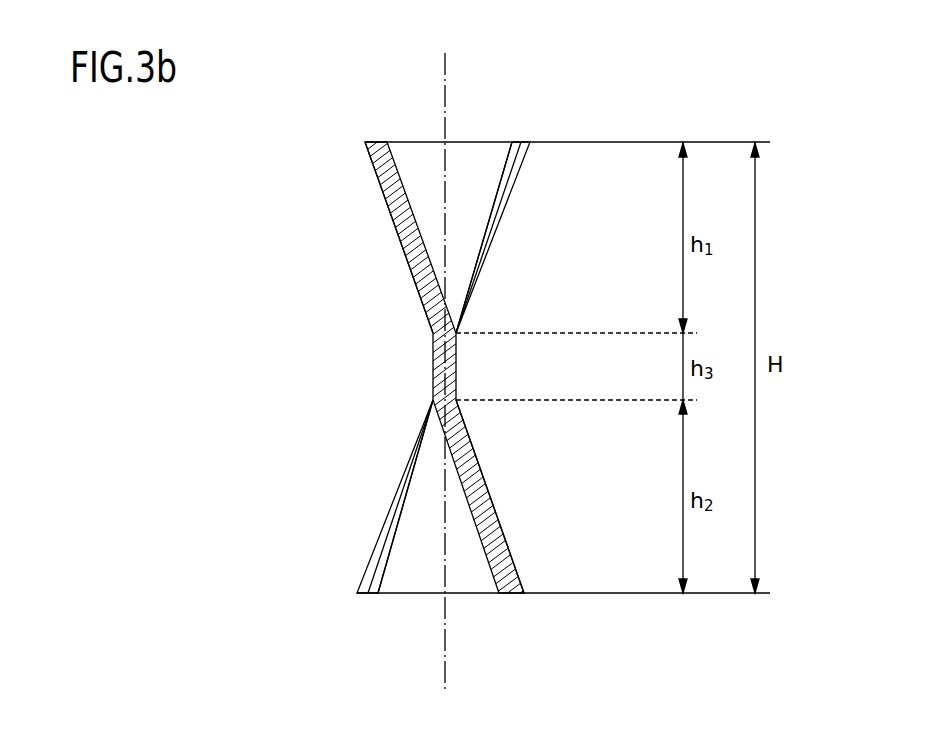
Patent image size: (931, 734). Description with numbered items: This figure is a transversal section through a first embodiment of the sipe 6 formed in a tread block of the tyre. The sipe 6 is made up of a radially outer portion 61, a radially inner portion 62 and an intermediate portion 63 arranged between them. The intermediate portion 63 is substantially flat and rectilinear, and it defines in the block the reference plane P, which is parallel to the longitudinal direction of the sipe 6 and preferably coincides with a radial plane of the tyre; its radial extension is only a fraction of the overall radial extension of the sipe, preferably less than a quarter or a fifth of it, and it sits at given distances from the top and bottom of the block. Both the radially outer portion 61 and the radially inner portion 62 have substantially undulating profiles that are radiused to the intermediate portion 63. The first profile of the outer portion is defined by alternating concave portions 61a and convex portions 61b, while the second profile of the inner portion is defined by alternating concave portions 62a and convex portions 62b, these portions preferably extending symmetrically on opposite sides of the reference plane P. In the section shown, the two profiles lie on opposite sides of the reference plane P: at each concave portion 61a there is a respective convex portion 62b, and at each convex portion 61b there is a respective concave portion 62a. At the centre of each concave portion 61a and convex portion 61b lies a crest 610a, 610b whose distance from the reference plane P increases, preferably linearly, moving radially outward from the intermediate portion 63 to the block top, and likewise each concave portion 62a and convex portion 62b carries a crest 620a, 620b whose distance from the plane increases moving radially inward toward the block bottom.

The sipe 6 is at (603, 93).
The reference plane P is at (445, 97).
The radially outer portion 61 is at (340, 192).
The concave portion 61a is at (393, 234).
The crest 610a is at (430, 284).
The convex portion 61b is at (521, 186).
The crest 610b is at (504, 217).
The intermediate portion 63 is at (431, 370).
The radially inner portion 62 is at (373, 440).
The concave portion 62a is at (368, 559).
The crest 620a is at (393, 512).
The convex portion 62b is at (515, 555).
The crest 620b is at (500, 518).